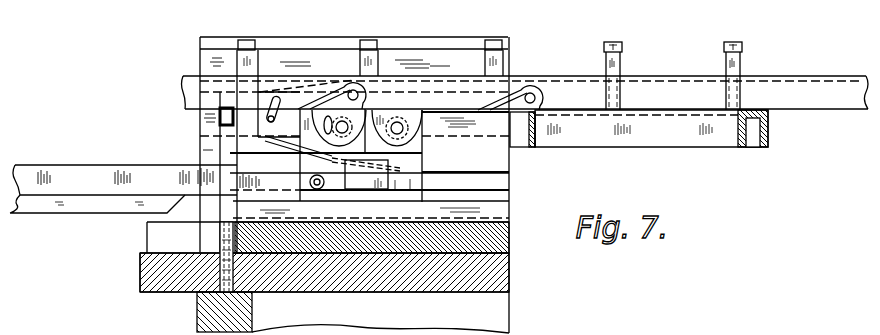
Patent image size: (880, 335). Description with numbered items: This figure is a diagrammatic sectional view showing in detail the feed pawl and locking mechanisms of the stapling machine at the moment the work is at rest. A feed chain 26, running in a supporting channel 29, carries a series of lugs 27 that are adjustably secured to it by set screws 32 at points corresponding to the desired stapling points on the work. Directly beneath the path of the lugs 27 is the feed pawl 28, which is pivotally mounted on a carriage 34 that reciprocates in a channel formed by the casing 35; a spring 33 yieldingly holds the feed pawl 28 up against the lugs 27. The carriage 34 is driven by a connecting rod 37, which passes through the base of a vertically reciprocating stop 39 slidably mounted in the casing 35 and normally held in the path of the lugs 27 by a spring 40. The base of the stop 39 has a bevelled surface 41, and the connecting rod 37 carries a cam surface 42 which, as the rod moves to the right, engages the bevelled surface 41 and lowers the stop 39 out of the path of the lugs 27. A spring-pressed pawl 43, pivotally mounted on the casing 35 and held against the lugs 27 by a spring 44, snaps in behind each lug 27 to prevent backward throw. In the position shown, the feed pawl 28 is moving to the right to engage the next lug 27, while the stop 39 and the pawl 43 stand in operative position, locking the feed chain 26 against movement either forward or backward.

The feed chain 26 is at (645, 97).
The lugs 27 is at (617, 62).
The feed pawl 28 is at (388, 120).
The supporting channel 29 is at (733, 132).
The set screws 32 is at (609, 42).
The spring 33 is at (373, 190).
The carriage 34 is at (432, 153).
The casing 35 is at (495, 206).
The connecting rod 37 is at (60, 165).
The stop 39 is at (227, 146).
The spring 40 is at (193, 291).
The bevelled surface 41 is at (230, 205).
The cam surface 42 is at (100, 205).
The pawl 43 is at (295, 100).
The spring 44 is at (274, 137).